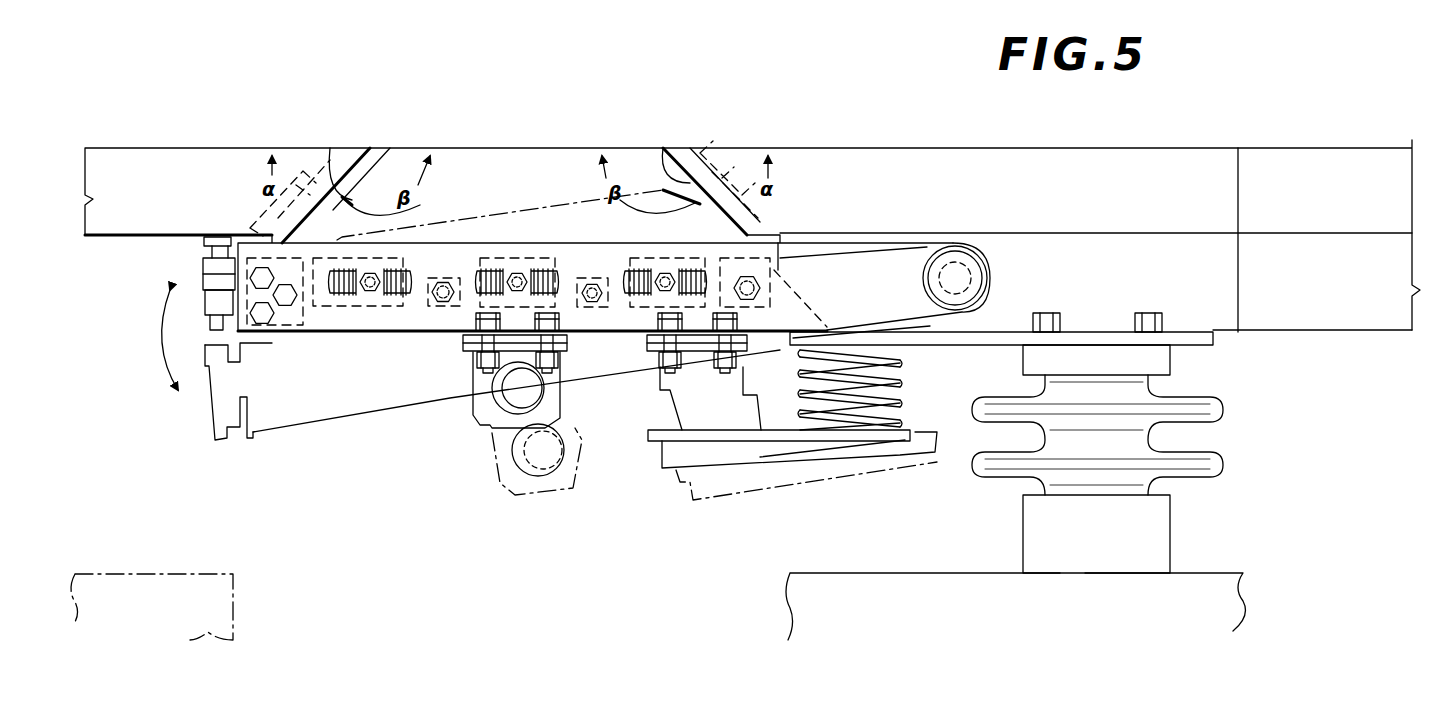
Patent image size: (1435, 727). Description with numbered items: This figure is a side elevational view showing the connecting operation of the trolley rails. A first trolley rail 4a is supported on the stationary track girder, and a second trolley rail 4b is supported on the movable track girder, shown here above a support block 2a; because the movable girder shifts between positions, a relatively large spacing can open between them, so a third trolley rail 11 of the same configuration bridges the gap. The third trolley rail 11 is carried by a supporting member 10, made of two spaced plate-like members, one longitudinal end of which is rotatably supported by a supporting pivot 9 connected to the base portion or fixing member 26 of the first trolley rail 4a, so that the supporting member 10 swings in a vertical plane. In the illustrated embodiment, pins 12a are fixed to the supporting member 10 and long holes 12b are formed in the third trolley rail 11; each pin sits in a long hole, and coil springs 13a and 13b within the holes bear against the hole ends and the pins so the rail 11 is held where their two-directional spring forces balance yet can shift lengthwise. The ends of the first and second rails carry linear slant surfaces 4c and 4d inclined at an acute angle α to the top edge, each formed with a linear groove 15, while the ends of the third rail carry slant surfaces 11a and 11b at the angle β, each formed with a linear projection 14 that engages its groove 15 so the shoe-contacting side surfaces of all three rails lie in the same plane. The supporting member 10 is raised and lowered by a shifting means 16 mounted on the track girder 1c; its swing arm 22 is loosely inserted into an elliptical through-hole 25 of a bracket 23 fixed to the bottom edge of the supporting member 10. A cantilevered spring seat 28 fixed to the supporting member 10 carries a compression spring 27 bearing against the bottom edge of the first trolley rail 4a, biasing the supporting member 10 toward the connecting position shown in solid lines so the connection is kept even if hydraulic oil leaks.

The track girder 1c is at (1190, 573).
The support block 2a is at (193, 573).
The first trolley rail 4a is at (1150, 172).
The second trolley rail 4b is at (230, 167).
The slant surface 4c is at (663, 148).
The slant surface 4d is at (390, 148).
The supporting pivot 9 is at (960, 272).
The supporting member 10 is at (840, 250).
The third trolley rail 11 is at (562, 167).
The slant surface 11a is at (712, 187).
The slant surface 11b is at (330, 202).
The pins 12a is at (370, 288).
The long holes 12b is at (438, 265).
The coil spring 13a is at (345, 297).
The coil spring 13b is at (385, 303).
The linear projection 14 is at (301, 190).
The linear groove 15 is at (257, 215).
The shifting means 16 is at (447, 424).
The swing arm 22 is at (517, 400).
The bracket 23 is at (550, 415).
The through-hole 25 is at (462, 407).
The fixing member 26 is at (1198, 300).
The compression spring 27 is at (895, 390).
The spring seat 28 is at (832, 440).